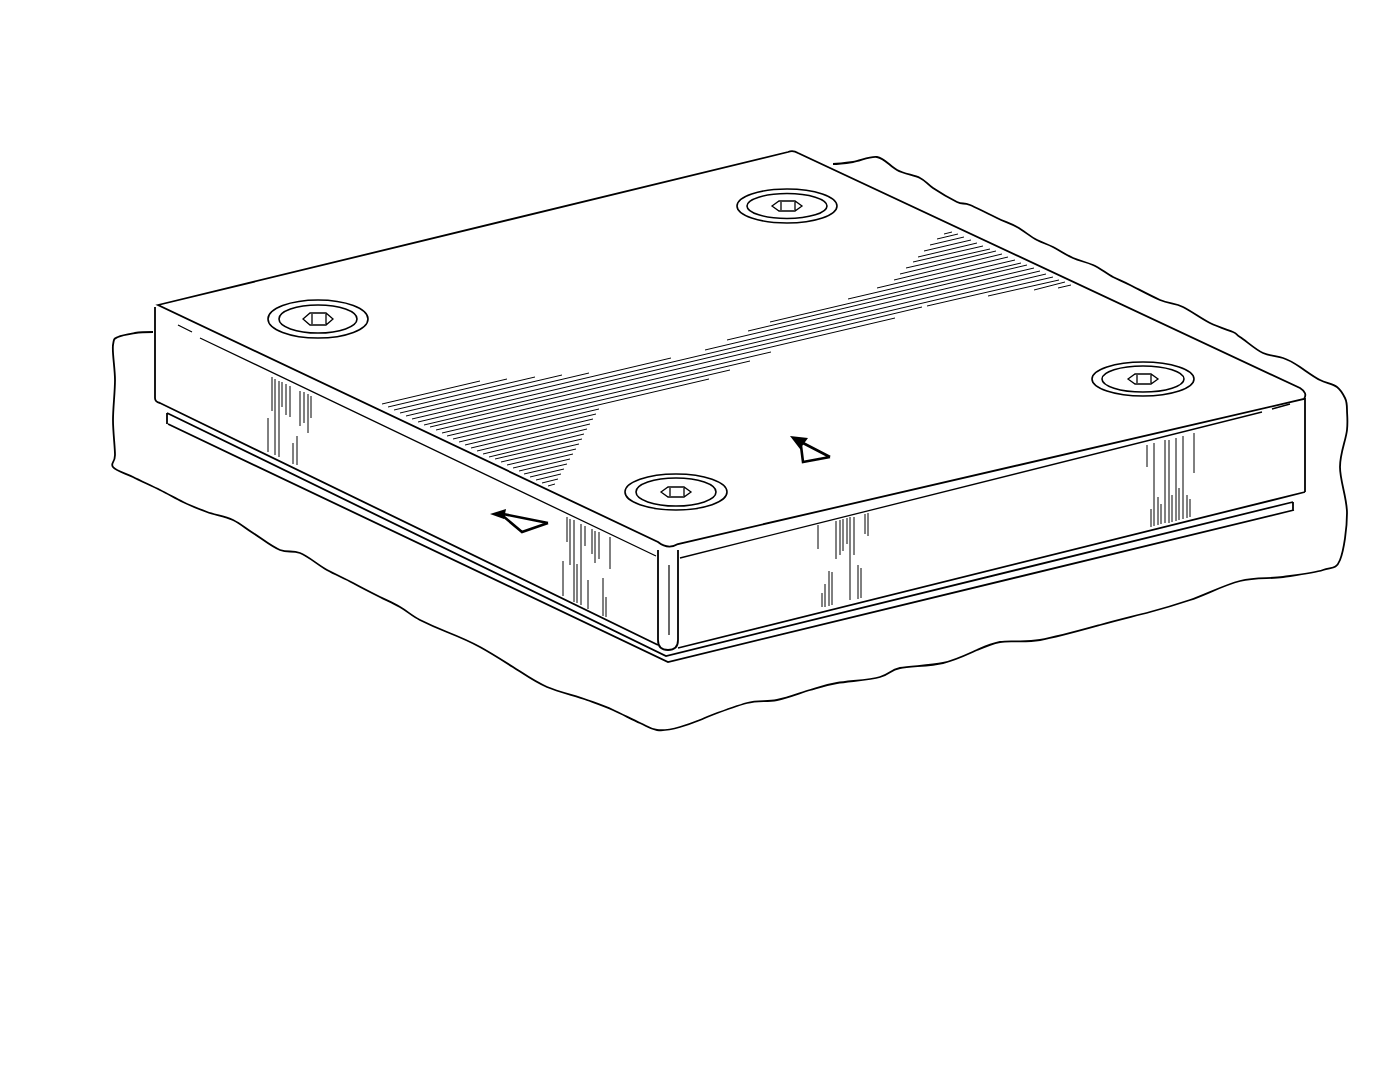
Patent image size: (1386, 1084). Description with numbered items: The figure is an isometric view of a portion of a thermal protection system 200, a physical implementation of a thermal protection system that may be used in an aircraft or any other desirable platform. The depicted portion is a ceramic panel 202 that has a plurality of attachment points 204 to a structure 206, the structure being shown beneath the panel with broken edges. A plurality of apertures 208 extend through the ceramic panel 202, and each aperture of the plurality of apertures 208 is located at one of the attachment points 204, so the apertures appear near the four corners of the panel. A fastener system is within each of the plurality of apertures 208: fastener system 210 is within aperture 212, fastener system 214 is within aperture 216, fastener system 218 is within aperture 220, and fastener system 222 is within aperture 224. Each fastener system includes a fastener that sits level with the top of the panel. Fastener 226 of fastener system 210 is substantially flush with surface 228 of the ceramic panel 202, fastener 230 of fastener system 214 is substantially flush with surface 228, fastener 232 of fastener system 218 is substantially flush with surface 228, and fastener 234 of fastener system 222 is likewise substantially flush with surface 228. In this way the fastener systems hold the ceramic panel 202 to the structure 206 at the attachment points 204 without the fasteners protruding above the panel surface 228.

The thermal protection system 200 is at (462, 122).
The ceramic panel 202 is at (477, 223).
The plurality of attachment points 204 is at (296, 290).
The structure 206 is at (648, 707).
The plurality of apertures 208 is at (763, 182).
The fastener system 210 is at (655, 465).
The aperture 212 is at (723, 497).
The fastener system 214 is at (381, 327).
The aperture 216 is at (350, 334).
The fastener system 218 is at (849, 213).
The aperture 220 is at (807, 222).
The fastener system 222 is at (1082, 372).
The aperture 224 is at (1113, 368).
The fastener 226 is at (697, 488).
The surface 228 is at (555, 213).
The fastener 230 is at (347, 315).
The fastener 232 is at (763, 208).
The fastener 234 is at (1113, 382).